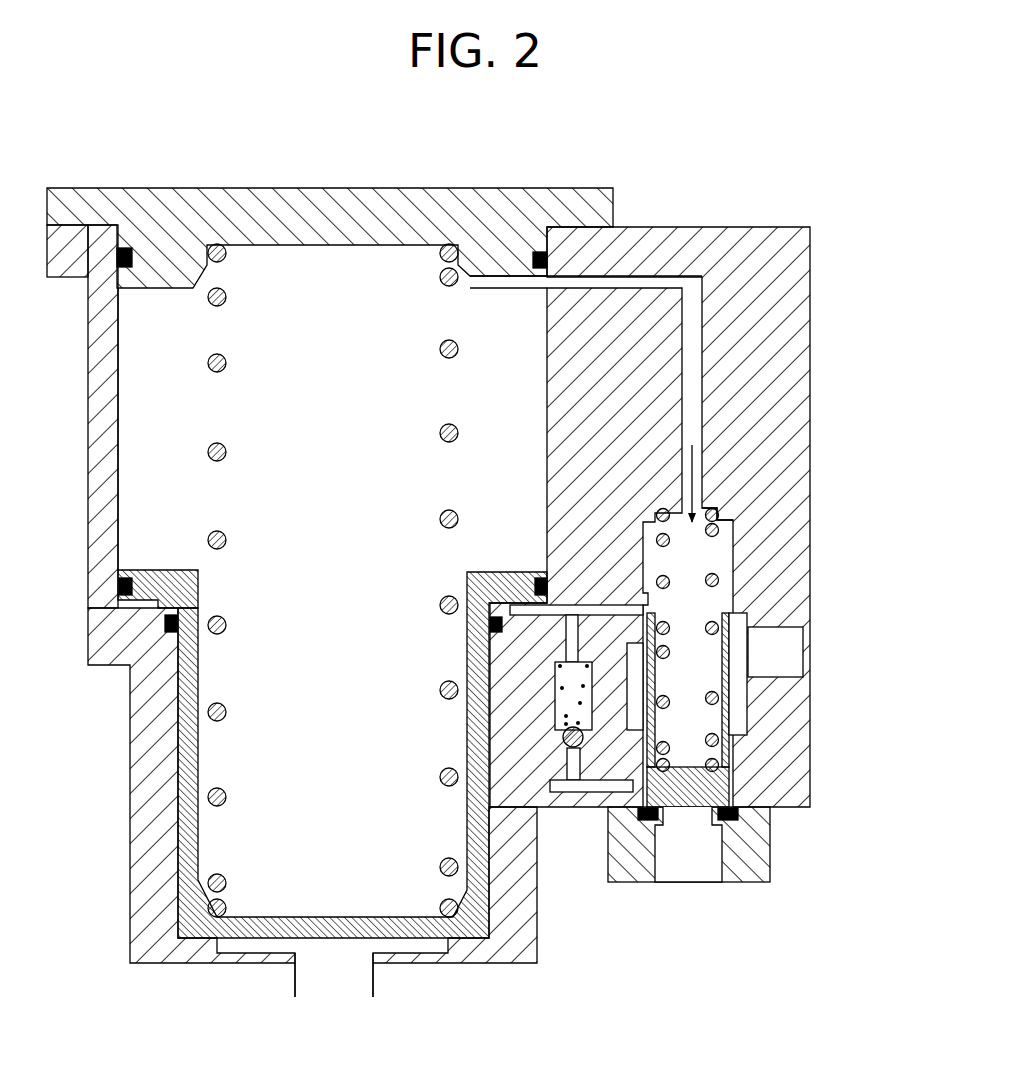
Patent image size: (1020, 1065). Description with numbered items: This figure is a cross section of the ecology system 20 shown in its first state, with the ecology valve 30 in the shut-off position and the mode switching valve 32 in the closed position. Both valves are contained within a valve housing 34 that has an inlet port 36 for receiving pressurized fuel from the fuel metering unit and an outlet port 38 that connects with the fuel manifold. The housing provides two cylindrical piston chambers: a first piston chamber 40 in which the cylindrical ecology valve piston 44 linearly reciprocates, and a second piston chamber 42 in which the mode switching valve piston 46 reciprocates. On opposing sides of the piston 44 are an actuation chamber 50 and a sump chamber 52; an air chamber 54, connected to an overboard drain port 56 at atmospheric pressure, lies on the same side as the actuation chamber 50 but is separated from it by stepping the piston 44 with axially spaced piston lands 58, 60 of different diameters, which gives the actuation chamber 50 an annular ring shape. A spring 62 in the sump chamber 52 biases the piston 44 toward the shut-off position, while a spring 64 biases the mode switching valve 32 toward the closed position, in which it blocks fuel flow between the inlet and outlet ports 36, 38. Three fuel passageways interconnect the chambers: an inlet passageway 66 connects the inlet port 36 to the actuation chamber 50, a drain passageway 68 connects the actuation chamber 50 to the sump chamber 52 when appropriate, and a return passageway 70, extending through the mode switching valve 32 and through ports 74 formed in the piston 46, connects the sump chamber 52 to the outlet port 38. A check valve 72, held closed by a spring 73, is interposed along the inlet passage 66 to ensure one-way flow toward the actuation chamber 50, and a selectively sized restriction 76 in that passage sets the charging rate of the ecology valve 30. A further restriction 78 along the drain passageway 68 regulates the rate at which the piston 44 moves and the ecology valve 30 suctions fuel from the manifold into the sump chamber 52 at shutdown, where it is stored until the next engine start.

The ecology system 20 is at (165, 157).
The ecology valve 30 is at (308, 277).
The mode switching valve 32 is at (705, 438).
The valve housing 34 is at (580, 240).
The inlet port 36 is at (697, 857).
The outlet port 38 is at (787, 600).
The first piston chamber 40 is at (120, 343).
The second piston chamber 42 is at (728, 598).
The ecology valve piston 44 is at (188, 857).
The mode switching valve piston 46 is at (735, 737).
The actuation chamber 50 is at (128, 603).
The sump chamber 52 is at (138, 468).
The air chamber 54 is at (253, 945).
The overboard drain port 56 is at (327, 985).
The piston land 58 is at (415, 930).
The piston land 60 is at (168, 570).
The spring 62 is at (208, 372).
The spring 64 is at (717, 532).
The inlet passageway 66 is at (572, 765).
The drain passageway 68 is at (575, 613).
The return passageway 70 is at (692, 297).
The check valve 72 is at (567, 732).
The spring 73 is at (558, 690).
The ports 74 is at (728, 723).
The restriction 76 is at (605, 792).
The restriction 78 is at (637, 607).